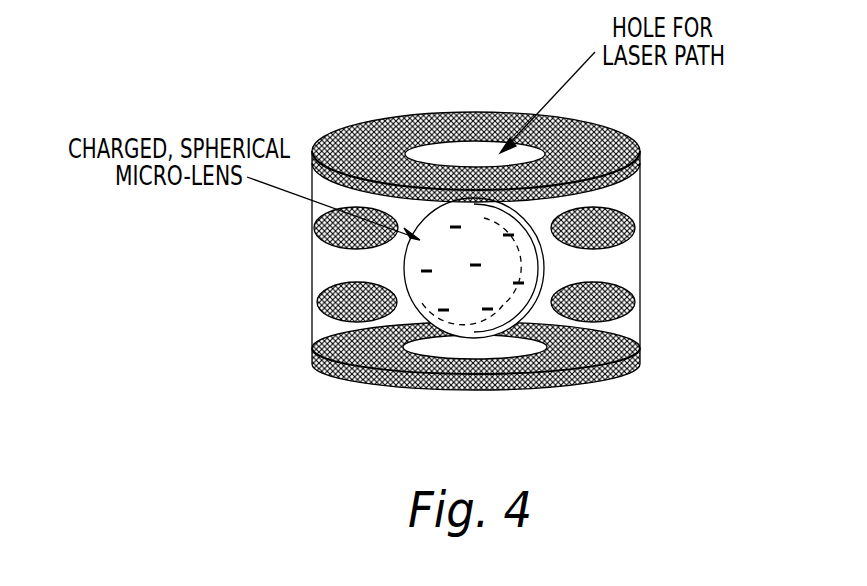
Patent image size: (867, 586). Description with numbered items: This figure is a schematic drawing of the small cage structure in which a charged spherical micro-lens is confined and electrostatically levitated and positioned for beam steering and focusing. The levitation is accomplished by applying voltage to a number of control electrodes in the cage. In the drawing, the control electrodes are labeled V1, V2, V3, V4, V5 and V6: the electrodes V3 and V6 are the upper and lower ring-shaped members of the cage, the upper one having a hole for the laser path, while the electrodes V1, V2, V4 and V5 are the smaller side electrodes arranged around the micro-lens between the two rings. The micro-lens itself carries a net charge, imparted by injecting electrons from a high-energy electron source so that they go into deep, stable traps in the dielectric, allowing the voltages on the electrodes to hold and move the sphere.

The first side electrode V1 is at (314, 228).
The second side electrode V2 is at (320, 292).
The top ring electrode with hole for laser path V3 is at (608, 127).
The third side electrode V4 is at (607, 232).
The fourth side electrode V5 is at (632, 298).
The bottom ring electrode V6 is at (632, 342).